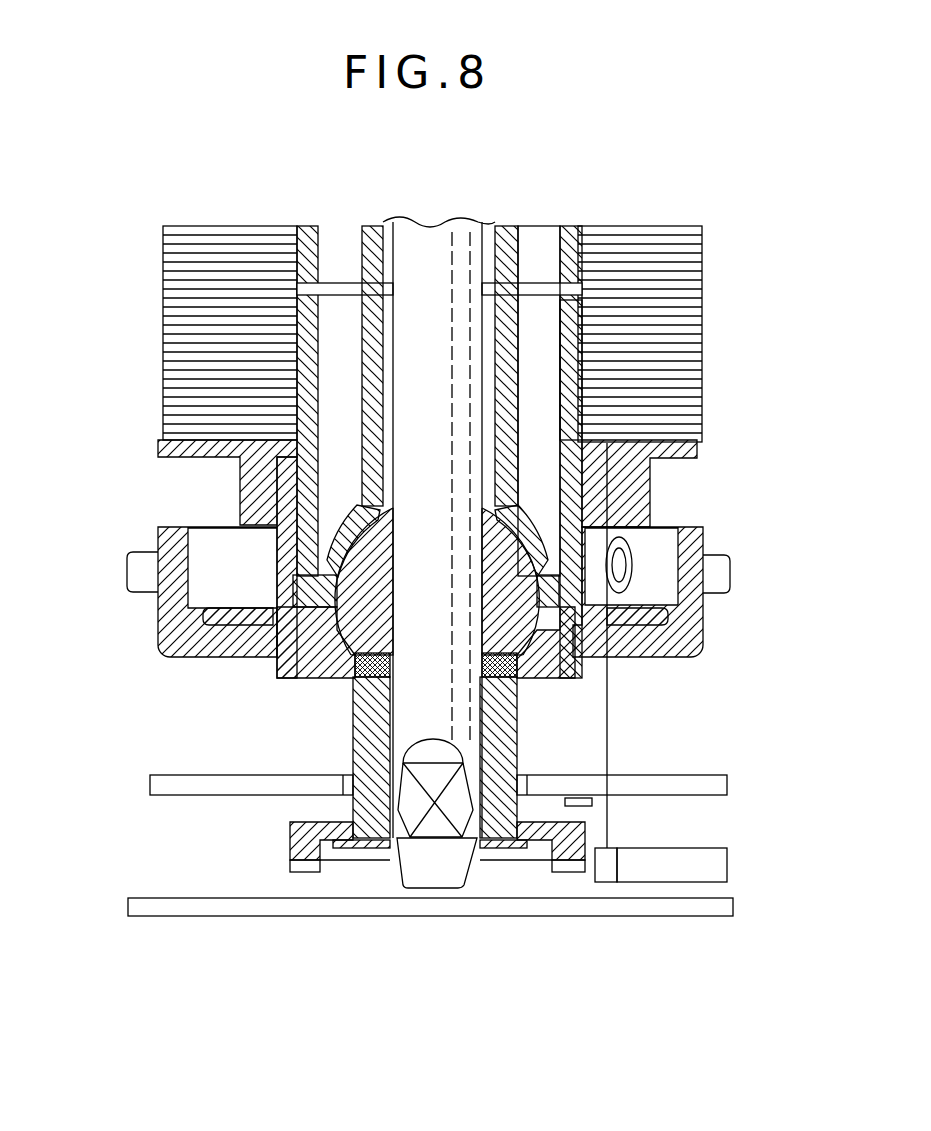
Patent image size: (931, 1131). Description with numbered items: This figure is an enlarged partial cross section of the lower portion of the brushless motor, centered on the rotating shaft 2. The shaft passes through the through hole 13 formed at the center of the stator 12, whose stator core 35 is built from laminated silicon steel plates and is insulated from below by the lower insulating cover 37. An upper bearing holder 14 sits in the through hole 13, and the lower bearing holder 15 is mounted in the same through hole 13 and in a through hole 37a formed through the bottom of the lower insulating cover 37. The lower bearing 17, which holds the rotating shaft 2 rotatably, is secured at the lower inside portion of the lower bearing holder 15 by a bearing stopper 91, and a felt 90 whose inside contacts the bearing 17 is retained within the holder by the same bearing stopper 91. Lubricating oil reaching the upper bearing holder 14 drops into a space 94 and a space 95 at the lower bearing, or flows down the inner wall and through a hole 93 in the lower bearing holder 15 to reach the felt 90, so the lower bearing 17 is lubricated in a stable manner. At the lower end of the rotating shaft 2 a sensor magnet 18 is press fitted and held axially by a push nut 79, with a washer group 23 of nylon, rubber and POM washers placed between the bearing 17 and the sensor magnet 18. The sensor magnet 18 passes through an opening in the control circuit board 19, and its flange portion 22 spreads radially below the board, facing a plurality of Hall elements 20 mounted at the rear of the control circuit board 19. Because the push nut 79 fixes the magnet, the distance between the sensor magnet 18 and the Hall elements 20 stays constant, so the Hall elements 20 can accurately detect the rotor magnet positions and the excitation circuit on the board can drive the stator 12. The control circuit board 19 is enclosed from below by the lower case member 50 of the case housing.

The rotating shaft 2 is at (460, 240).
The space 94 is at (538, 240).
The upper bearing holder 14 is at (573, 225).
The stator 12 is at (680, 206).
The stator core 35 is at (667, 285).
The through hole 13 is at (572, 364).
The space 95 is at (535, 440).
The lower insulating cover 37 is at (187, 456).
The through hole 37a is at (285, 483).
The lower bearing holder 15 is at (650, 498).
The hole 93 is at (587, 565).
The felt 90 is at (273, 596).
The bearing stopper 91 is at (330, 656).
The lower bearing 17 is at (322, 652).
The washer group 23 is at (527, 665).
The sensor magnet 18 is at (513, 720).
The control circuit board 19 is at (202, 787).
The flange portion 22 is at (290, 843).
The lower case member 50 is at (308, 912).
The push nut 79 is at (507, 850).
The Hall elements 20 is at (573, 808).